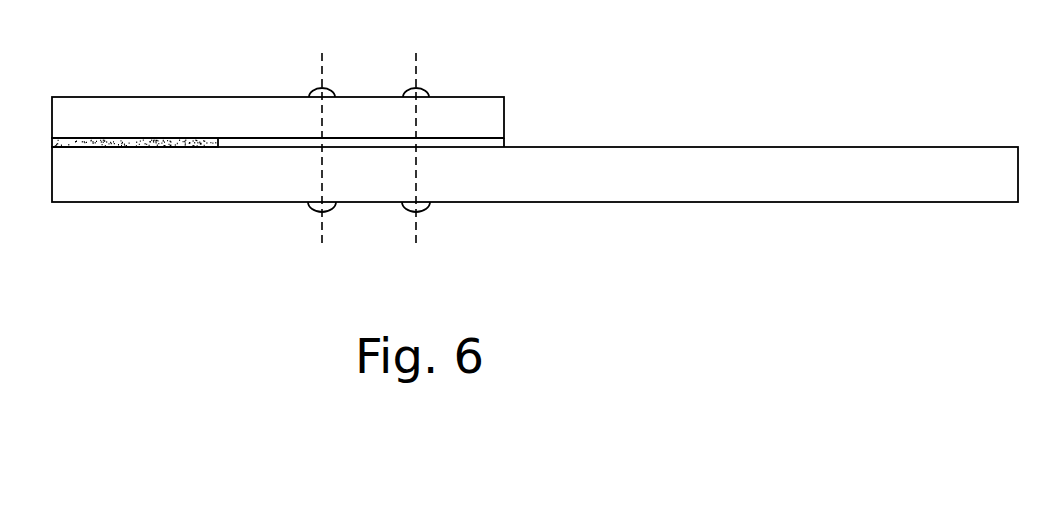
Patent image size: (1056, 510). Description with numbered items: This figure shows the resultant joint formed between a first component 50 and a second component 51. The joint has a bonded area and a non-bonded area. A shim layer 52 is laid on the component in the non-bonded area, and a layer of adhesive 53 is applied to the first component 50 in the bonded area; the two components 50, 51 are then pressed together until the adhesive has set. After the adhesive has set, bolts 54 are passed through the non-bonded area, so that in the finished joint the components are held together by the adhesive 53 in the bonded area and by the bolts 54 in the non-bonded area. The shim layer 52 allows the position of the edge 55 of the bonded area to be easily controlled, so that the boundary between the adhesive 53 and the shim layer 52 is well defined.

The first component 50 is at (466, 117).
The second component 51 is at (597, 187).
The shim layer 52 is at (505, 143).
The layer of adhesive 53 is at (157, 148).
The bolts 54 is at (410, 91).
The edge of the bonded area 55 is at (217, 141).